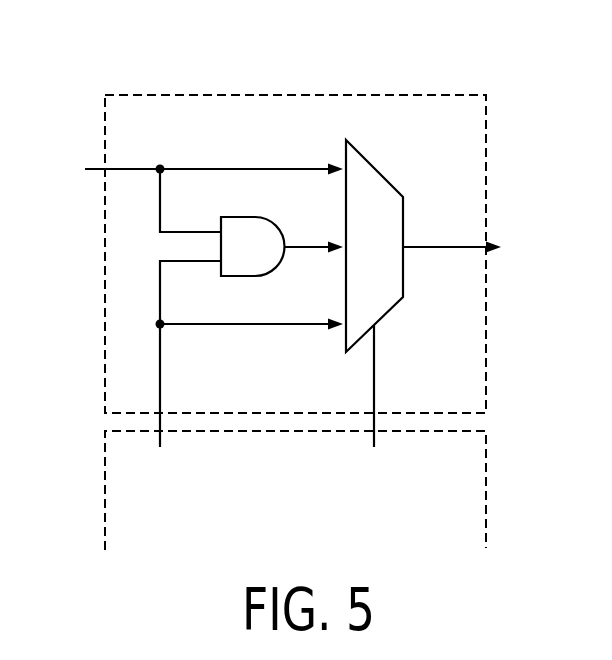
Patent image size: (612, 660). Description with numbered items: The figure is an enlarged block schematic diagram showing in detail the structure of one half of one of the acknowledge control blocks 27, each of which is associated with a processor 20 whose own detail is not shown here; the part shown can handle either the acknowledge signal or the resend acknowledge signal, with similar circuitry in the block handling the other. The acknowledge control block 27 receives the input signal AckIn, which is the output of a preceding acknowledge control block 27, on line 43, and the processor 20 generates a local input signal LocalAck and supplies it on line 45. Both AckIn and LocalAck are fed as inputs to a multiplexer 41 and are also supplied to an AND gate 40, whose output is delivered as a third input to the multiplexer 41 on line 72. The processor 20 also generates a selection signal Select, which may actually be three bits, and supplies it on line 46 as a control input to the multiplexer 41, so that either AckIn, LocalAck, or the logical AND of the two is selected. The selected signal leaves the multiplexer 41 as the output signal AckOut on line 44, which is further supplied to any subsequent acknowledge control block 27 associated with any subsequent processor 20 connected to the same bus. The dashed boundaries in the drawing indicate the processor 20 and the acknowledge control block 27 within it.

The processor 20 is at (103, 455).
The acknowledge control block 27 is at (297, 95).
The AND gate 40 is at (240, 217).
The multiplexer 41 is at (374, 167).
The line 43 is at (135, 168).
The line 44 is at (466, 245).
The line 45 is at (158, 345).
The line 46 is at (374, 345).
The line 72 is at (313, 250).